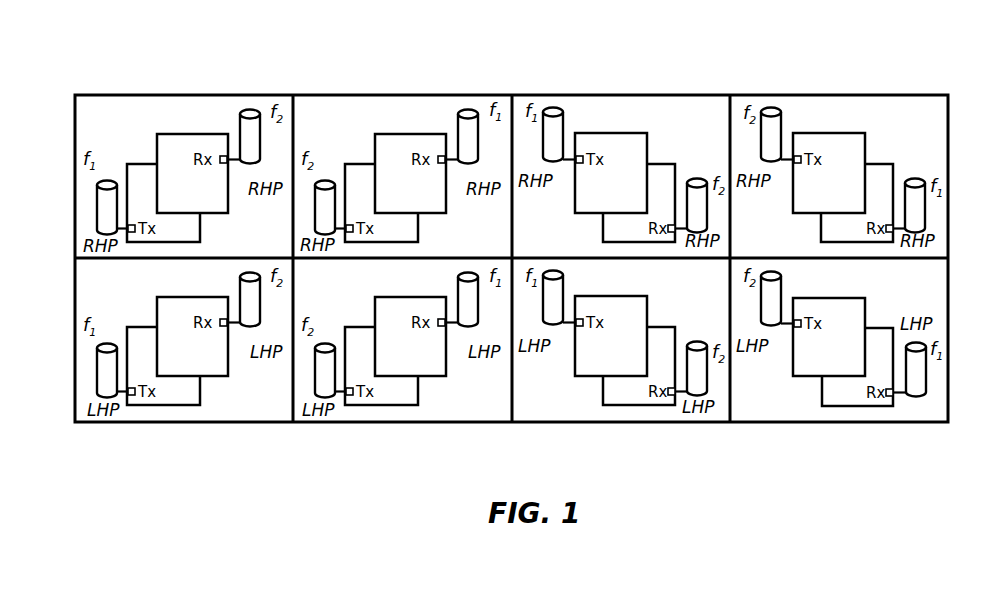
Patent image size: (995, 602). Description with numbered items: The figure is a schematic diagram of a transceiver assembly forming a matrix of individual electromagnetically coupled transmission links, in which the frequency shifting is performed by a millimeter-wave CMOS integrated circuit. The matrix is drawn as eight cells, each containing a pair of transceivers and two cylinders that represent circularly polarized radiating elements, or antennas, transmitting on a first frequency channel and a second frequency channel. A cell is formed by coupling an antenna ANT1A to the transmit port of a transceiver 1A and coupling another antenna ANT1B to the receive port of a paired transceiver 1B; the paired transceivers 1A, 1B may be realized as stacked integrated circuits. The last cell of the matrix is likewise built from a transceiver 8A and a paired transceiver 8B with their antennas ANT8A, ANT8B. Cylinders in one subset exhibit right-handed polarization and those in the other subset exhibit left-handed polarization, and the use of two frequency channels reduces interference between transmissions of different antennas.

The antenna ANT1A is at (111, 181).
The transceiver 1A is at (140, 164).
The paired transceiver 1B is at (193, 134).
The antenna ANT1B is at (252, 110).
The antenna ANT8A is at (781, 332).
The transceiver 8A is at (810, 378).
The paired transceiver 8B is at (850, 402).
The antenna ANT8B is at (910, 397).